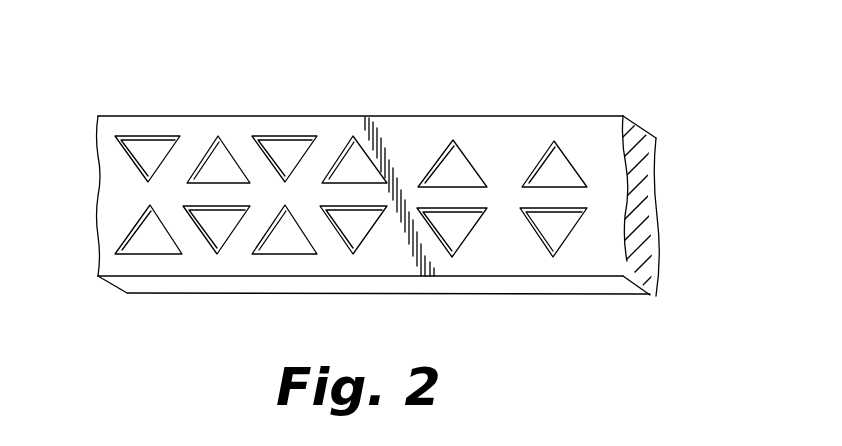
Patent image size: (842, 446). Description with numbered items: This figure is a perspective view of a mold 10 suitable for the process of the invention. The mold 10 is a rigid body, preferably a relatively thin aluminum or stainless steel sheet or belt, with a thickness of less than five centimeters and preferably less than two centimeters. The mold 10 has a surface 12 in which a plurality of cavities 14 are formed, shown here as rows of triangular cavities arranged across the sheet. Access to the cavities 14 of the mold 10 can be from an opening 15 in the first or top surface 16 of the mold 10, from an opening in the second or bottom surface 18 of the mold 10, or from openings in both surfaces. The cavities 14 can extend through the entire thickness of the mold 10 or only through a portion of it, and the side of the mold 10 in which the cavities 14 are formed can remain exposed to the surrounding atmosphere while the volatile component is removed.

The mold 10 is at (636, 88).
The surface 12 is at (112, 187).
The cavities 14 is at (463, 161).
The opening 15 is at (219, 155).
The first or top surface 16 is at (614, 152).
The second or bottom surface 18 is at (657, 147).